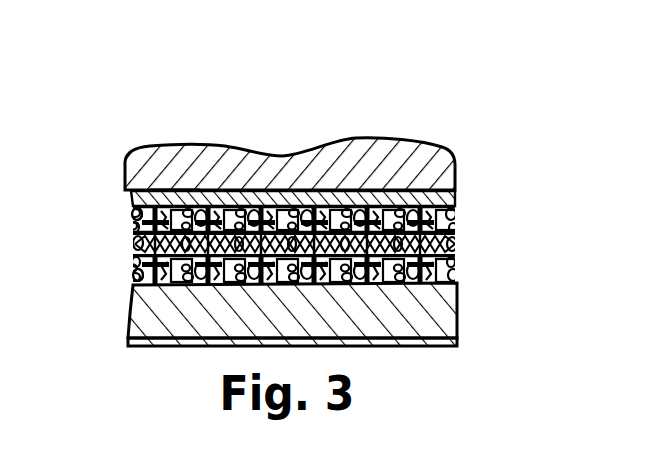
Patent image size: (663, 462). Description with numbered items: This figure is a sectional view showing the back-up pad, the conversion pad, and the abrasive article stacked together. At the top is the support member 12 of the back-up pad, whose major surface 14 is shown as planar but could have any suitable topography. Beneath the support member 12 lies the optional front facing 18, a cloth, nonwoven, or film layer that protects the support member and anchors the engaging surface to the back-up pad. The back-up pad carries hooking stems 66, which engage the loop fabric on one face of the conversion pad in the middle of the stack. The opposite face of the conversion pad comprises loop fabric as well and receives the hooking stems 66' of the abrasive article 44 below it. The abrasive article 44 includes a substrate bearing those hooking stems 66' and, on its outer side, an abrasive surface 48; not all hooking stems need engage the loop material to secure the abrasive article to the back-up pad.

The support member 12 is at (280, 145).
The major surface 14 is at (176, 204).
The front facing 18 is at (455, 192).
The abrasive article 44 is at (443, 313).
The abrasive surface 48 is at (427, 347).
The hooking stems 66 is at (108, 197).
The hooking stems 66' is at (106, 294).